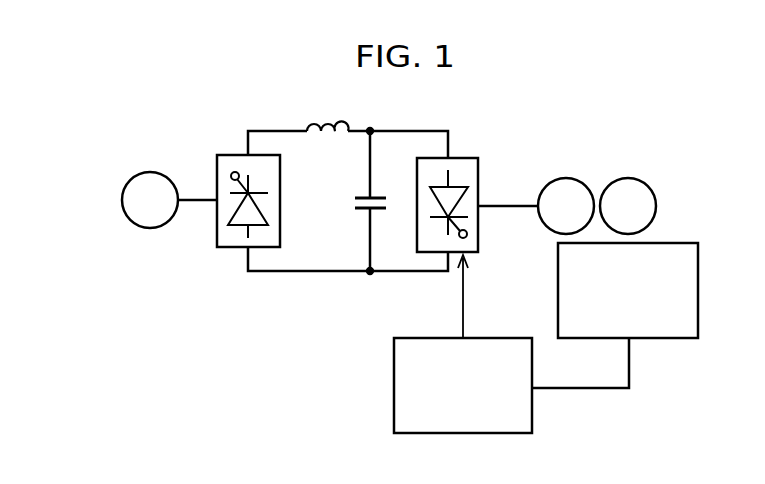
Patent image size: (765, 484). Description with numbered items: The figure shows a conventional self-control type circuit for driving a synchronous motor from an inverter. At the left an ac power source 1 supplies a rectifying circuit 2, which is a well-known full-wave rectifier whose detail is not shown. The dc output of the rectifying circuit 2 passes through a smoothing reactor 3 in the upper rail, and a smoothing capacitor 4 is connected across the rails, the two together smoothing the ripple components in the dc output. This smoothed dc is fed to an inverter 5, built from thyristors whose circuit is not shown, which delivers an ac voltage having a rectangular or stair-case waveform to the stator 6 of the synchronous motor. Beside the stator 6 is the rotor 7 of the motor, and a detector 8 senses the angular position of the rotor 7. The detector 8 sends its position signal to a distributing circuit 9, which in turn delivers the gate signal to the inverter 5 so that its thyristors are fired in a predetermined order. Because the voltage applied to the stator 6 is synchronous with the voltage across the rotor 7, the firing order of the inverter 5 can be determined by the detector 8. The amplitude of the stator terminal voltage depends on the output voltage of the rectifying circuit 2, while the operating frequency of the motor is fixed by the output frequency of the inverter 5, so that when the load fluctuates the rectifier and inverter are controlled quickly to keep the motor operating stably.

The ac power source 1 is at (163, 172).
The rectifying circuit 2 is at (228, 155).
The smoothing reactor 3 is at (322, 138).
The smoothing capacitor 4 is at (355, 203).
The inverter 5 is at (478, 177).
The stator 6 is at (566, 178).
The rotor 7 is at (626, 178).
The detector 8 is at (698, 280).
The distributing circuit 9 is at (497, 338).